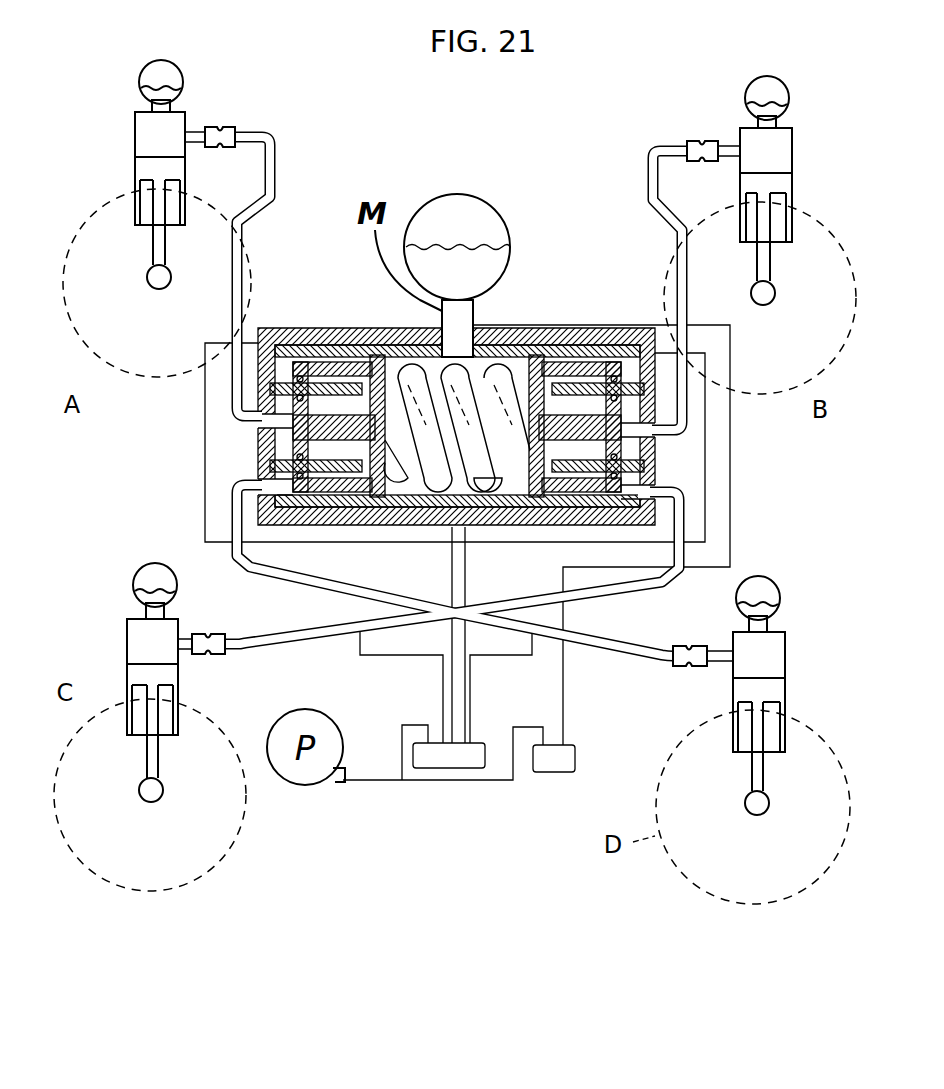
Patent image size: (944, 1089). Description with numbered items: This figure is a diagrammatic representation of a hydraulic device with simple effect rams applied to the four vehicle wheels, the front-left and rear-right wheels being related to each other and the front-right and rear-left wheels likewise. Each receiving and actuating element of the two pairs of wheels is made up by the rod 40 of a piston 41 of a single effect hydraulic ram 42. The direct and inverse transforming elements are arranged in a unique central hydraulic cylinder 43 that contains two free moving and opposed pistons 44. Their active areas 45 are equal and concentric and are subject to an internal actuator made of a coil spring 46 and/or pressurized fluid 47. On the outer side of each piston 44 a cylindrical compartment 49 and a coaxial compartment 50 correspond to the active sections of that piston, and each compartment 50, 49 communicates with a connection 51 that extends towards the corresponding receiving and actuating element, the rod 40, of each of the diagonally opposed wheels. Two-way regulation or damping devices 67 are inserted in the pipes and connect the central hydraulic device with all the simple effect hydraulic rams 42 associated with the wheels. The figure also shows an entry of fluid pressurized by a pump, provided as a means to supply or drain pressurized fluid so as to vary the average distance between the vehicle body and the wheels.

The rod 40 is at (157, 242).
The piston 41 is at (148, 170).
The single effect hydraulic ram 42 is at (135, 137).
The central hydraulic cylinder 43 is at (344, 322).
The free moving opposed piston 44 is at (268, 452).
The active area 45 is at (295, 420).
The coil spring 46 is at (498, 333).
The pressurized fluid 47 is at (475, 215).
The cylindrical compartment 49 is at (648, 492).
The coaxial compartment 50 is at (285, 395).
The connection 51 is at (273, 165).
The two-way regulation or damping device 67 is at (173, 75).